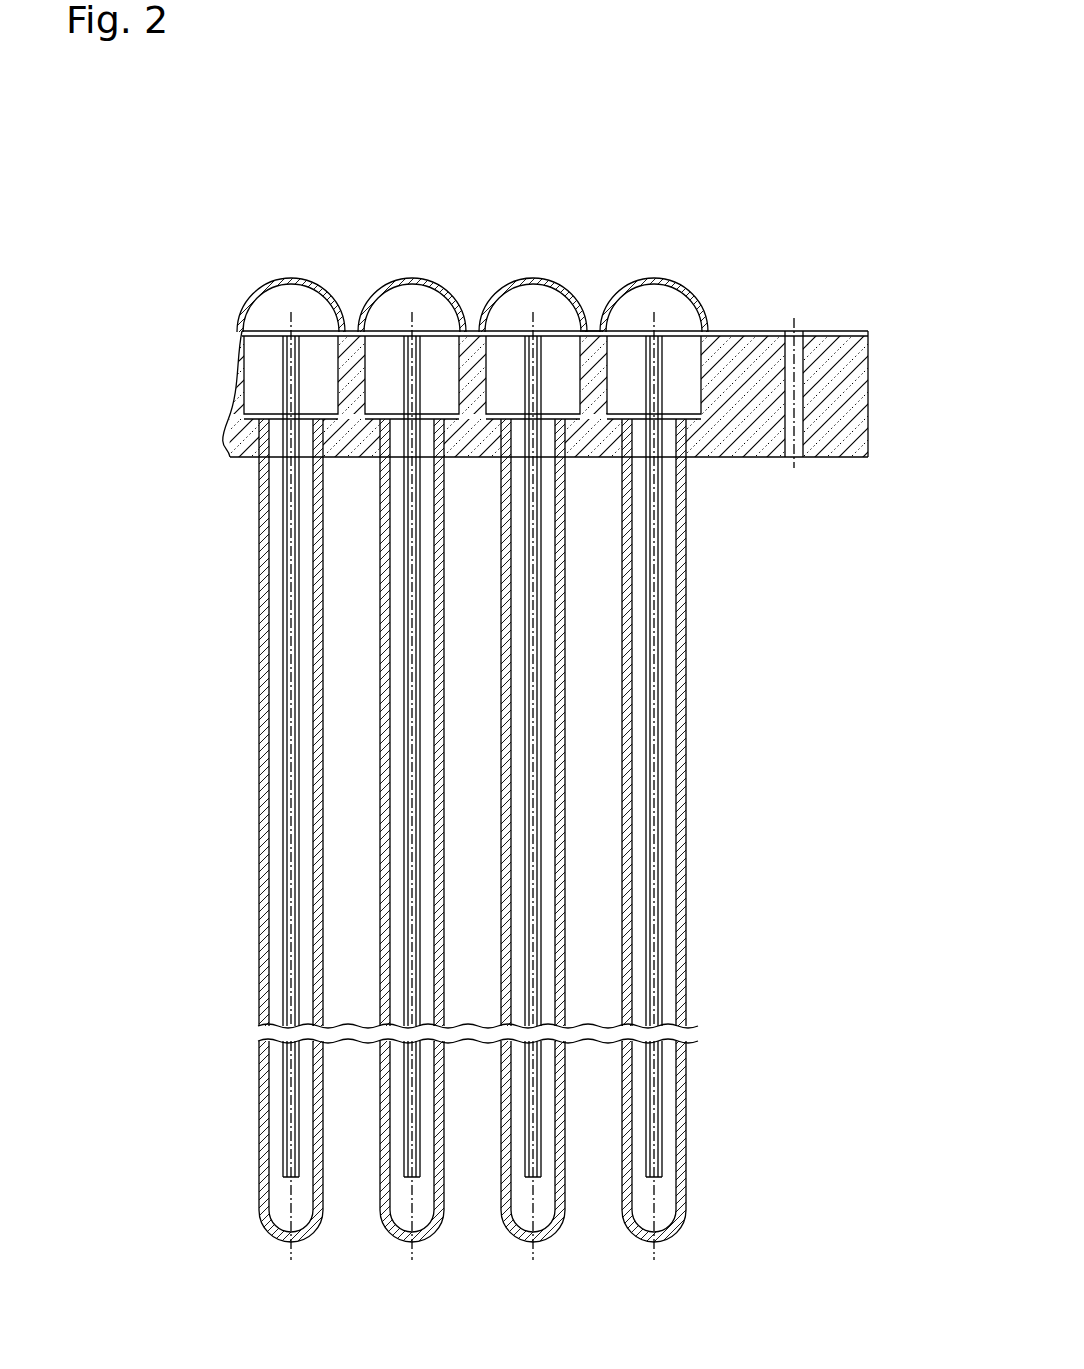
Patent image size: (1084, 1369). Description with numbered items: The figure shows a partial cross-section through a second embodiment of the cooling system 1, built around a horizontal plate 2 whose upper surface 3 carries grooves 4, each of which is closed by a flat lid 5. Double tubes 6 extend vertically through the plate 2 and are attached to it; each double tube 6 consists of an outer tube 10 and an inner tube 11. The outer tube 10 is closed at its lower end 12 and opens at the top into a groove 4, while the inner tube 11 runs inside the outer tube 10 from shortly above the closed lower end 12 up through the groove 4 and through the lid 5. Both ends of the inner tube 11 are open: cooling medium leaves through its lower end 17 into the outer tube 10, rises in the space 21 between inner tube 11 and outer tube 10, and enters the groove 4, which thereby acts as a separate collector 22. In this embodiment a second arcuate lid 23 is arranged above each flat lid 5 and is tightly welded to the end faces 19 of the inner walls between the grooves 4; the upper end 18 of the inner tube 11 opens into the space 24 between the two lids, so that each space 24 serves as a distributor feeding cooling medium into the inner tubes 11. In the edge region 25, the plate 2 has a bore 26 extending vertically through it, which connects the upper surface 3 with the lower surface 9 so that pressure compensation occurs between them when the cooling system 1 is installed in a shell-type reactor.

The cooling system 1 is at (307, 150).
The horizontal plate 2 is at (748, 331).
The upper surface 3 is at (845, 332).
The groove 4 is at (253, 372).
The collector 22 is at (472, 377).
The lid 5 is at (387, 331).
The second arcuate lid 23 is at (442, 291).
The space 24 is at (552, 306).
The end face 19 is at (592, 331).
The upper end 18 is at (654, 336).
The edge region 25 is at (855, 380).
The bore 26 is at (790, 458).
The lower surface 9 is at (833, 458).
The double tube 6 is at (685, 698).
The outer tube 10 is at (685, 784).
The inner tube 11 is at (660, 876).
The space 21 is at (665, 957).
The lower end 17 is at (662, 1178).
The lower end 12 is at (668, 1243).